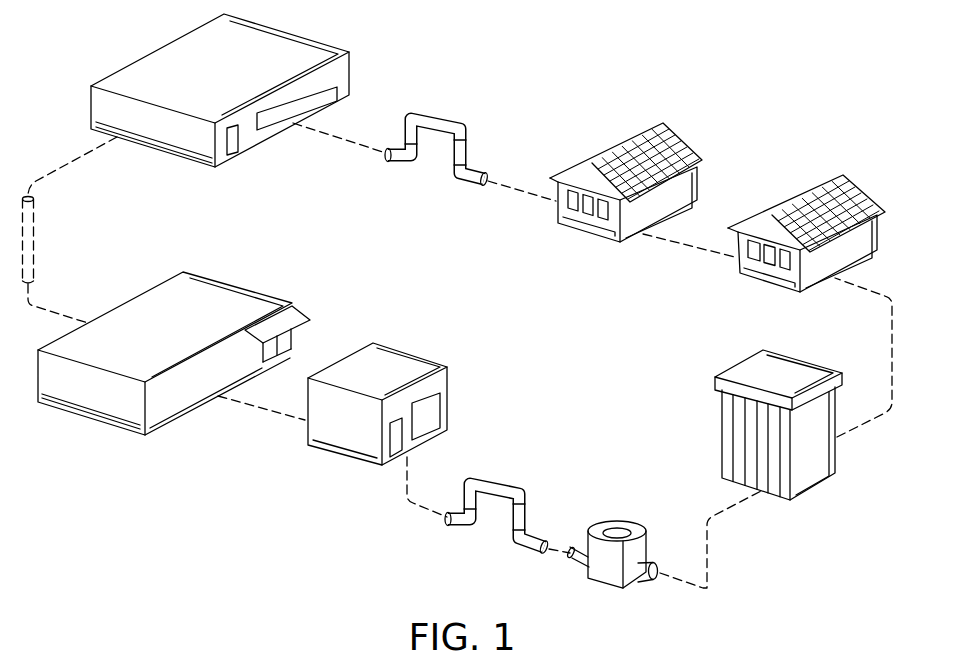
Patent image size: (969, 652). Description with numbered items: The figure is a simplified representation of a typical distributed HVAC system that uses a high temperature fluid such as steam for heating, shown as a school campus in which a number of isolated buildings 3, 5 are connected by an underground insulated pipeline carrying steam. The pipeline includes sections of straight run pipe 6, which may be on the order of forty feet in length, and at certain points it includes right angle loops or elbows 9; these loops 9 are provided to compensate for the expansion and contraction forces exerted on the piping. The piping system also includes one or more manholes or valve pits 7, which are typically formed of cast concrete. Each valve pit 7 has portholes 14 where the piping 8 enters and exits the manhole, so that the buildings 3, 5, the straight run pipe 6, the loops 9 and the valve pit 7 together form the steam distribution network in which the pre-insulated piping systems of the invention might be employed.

The isolated building 3 is at (608, 145).
The isolated building 5 is at (787, 197).
The straight run pipe 6 is at (35, 232).
The valve pit 7 is at (624, 521).
The piping 8 is at (578, 560).
The right angle loop 9 is at (437, 117).
The porthole 14 is at (654, 579).